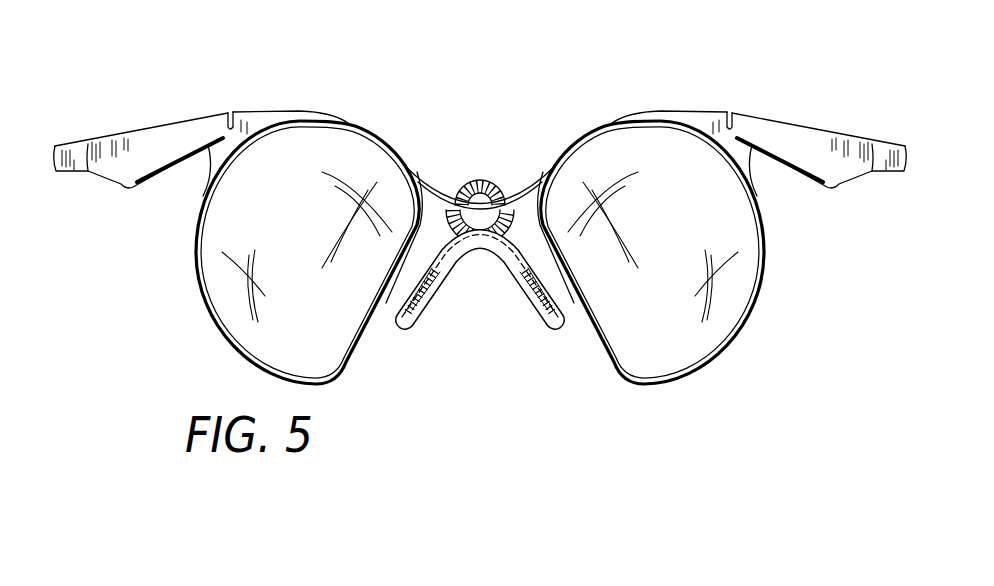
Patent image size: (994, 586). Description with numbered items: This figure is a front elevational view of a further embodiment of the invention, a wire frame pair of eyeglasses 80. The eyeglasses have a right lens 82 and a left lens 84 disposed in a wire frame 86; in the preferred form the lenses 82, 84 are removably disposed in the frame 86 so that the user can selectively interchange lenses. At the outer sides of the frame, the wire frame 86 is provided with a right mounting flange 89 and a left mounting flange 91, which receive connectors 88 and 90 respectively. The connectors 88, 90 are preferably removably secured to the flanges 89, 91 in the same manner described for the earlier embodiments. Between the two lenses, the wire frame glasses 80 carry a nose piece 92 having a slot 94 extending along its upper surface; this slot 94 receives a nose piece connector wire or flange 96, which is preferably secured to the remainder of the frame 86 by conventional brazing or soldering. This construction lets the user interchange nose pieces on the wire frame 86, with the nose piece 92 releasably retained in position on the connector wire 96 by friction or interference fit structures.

The wire frame pair of eyeglasses 80 is at (463, 86).
The right lens 82 is at (227, 290).
The left lens 84 is at (740, 277).
The wire frame 86 is at (602, 357).
The connector 88 is at (140, 147).
The right mounting flange 89 is at (261, 118).
The connector 90 is at (843, 168).
The left mounting flange 91 is at (700, 117).
The nose piece 92 is at (486, 293).
The slot 94 is at (393, 327).
The nose piece connector wire 96 is at (575, 323).